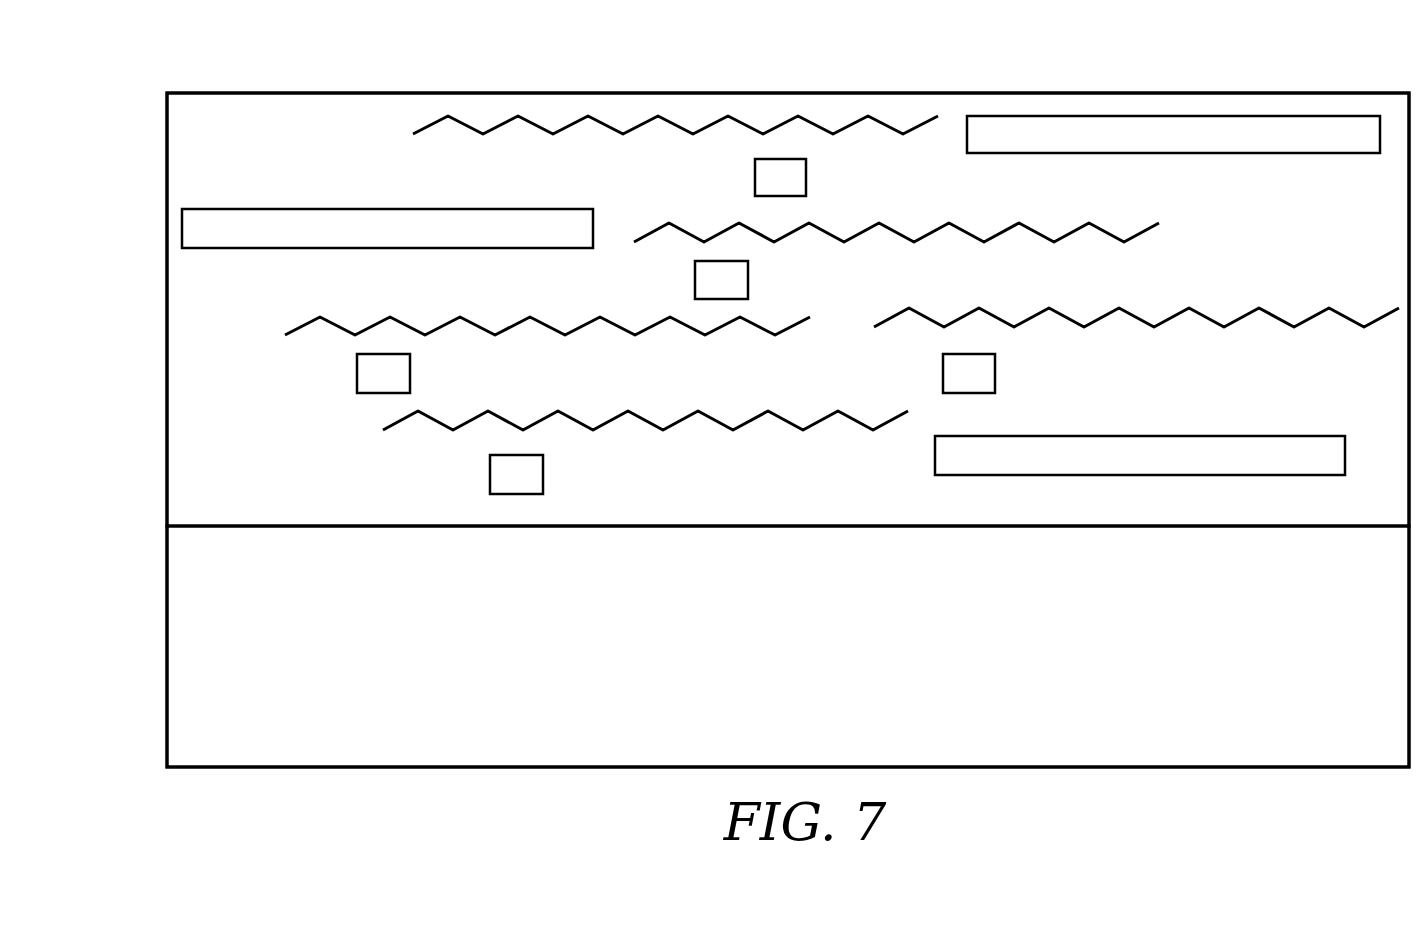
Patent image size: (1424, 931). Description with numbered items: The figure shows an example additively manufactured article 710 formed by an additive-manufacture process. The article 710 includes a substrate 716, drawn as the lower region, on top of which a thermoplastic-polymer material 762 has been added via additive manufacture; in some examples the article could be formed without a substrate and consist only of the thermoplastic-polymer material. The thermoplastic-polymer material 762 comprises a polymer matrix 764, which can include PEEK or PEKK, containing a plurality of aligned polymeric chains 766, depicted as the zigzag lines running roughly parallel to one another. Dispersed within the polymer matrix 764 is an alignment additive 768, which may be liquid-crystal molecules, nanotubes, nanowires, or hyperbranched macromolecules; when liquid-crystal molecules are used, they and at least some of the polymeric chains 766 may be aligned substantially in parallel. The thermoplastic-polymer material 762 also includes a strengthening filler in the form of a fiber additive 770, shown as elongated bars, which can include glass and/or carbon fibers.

The additively manufactured article 710 is at (119, 768).
The substrate 716 is at (769, 659).
The thermoplastic-polymer material 762 is at (225, 121).
The polymer matrix 764 is at (838, 296).
The aligned polymeric chains 766 is at (682, 442).
The alignment additive 768 is at (762, 189).
The fiber additive 770 is at (1155, 146).